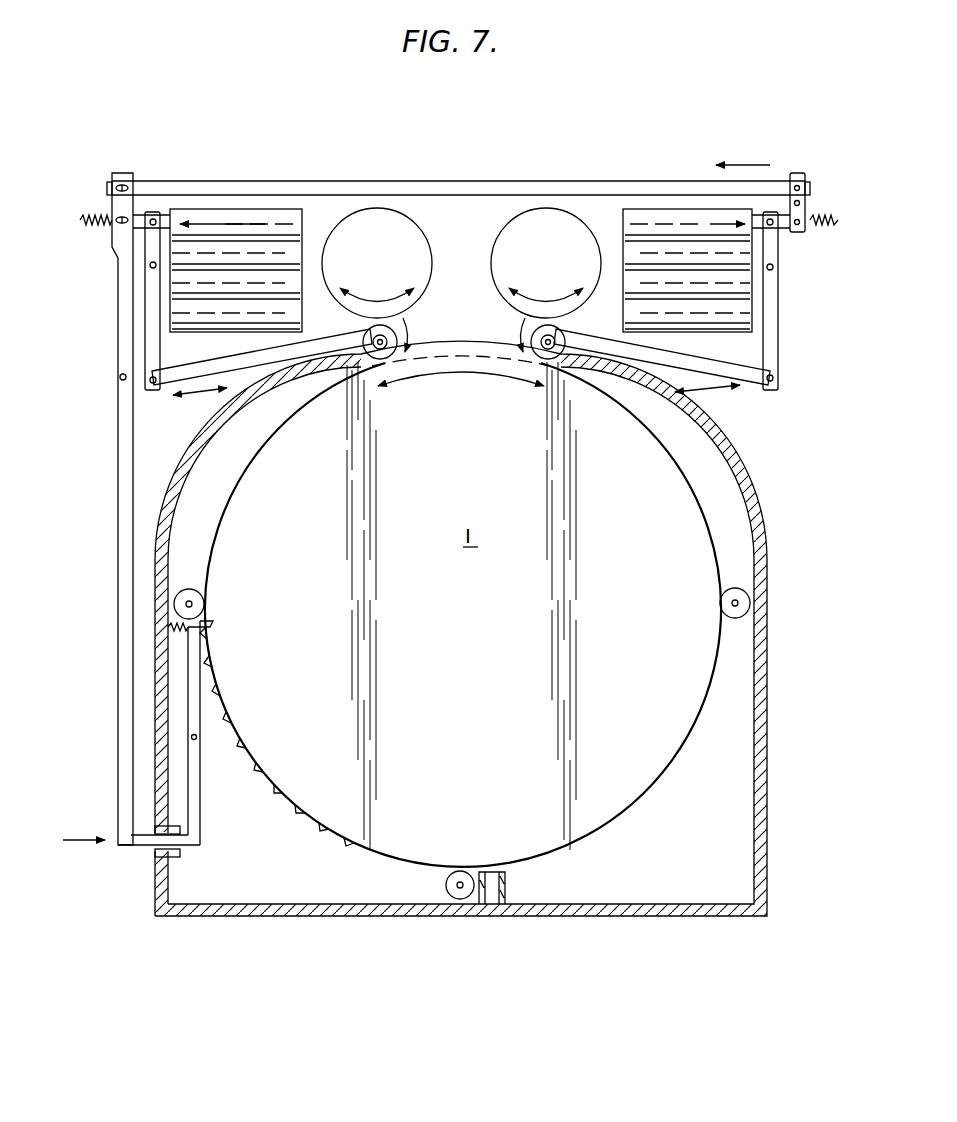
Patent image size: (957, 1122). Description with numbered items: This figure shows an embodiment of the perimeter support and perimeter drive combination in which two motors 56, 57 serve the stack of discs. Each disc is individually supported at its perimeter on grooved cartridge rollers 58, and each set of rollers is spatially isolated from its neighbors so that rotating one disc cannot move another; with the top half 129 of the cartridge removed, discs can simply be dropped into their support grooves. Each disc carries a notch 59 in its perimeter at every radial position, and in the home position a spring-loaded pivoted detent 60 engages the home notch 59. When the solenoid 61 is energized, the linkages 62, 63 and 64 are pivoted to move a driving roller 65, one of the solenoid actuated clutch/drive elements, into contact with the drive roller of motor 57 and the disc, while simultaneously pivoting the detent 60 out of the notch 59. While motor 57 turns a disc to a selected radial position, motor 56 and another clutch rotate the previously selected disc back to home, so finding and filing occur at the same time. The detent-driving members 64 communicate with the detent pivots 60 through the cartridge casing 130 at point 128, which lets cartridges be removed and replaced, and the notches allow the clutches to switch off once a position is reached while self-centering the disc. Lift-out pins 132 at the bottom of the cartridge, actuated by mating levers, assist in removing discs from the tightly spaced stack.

The motor 56 is at (557, 228).
The motor 57 is at (403, 230).
The perimeter support wheels or bearings 58 is at (205, 604).
The notch 59 is at (212, 623).
The spring-loaded pivoted detent 60 is at (199, 690).
The solenoid 61 is at (178, 248).
The linkage 62 is at (148, 322).
The linkage 63 is at (243, 380).
The detent-driving member 64 is at (118, 440).
The solenoid actuated clutch/drive element 65 is at (398, 353).
The point 128 is at (158, 850).
The top half of the cartridge 129 is at (745, 480).
The cartridge casing 130 is at (160, 612).
The lift-out pin 132 is at (493, 900).